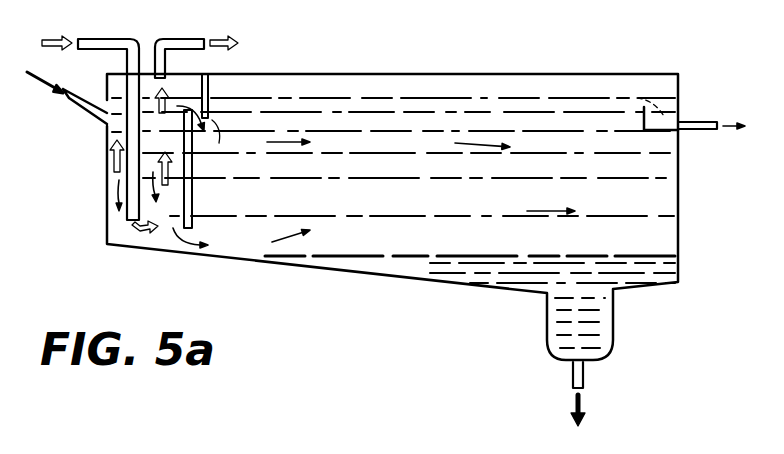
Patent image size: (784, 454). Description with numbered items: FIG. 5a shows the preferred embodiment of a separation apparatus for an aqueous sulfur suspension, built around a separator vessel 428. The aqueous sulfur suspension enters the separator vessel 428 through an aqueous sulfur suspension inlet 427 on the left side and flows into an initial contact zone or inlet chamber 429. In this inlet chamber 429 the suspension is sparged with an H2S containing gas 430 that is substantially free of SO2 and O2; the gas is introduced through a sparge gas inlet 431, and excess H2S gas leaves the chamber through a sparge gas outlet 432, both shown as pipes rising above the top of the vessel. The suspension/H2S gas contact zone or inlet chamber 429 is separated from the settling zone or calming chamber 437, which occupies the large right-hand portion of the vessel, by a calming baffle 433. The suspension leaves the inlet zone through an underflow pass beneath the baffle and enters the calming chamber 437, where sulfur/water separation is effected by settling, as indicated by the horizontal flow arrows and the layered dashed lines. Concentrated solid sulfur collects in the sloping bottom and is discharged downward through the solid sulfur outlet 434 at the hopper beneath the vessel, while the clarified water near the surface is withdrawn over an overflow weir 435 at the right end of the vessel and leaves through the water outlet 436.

The aqueous sulfur suspension inlet 427 is at (76, 108).
The separator vessel 428 is at (538, 72).
The inlet chamber 429 is at (167, 207).
The H2S containing gas 430 is at (110, 38).
The sparge gas inlet 431 is at (128, 225).
The sparge gas outlet 432 is at (185, 29).
The calming baffle 433 is at (197, 147).
The solid sulfur outlet 434 is at (585, 380).
The overflow weir 435 is at (665, 133).
The water outlet 436 is at (707, 120).
The calming chamber 437 is at (441, 179).